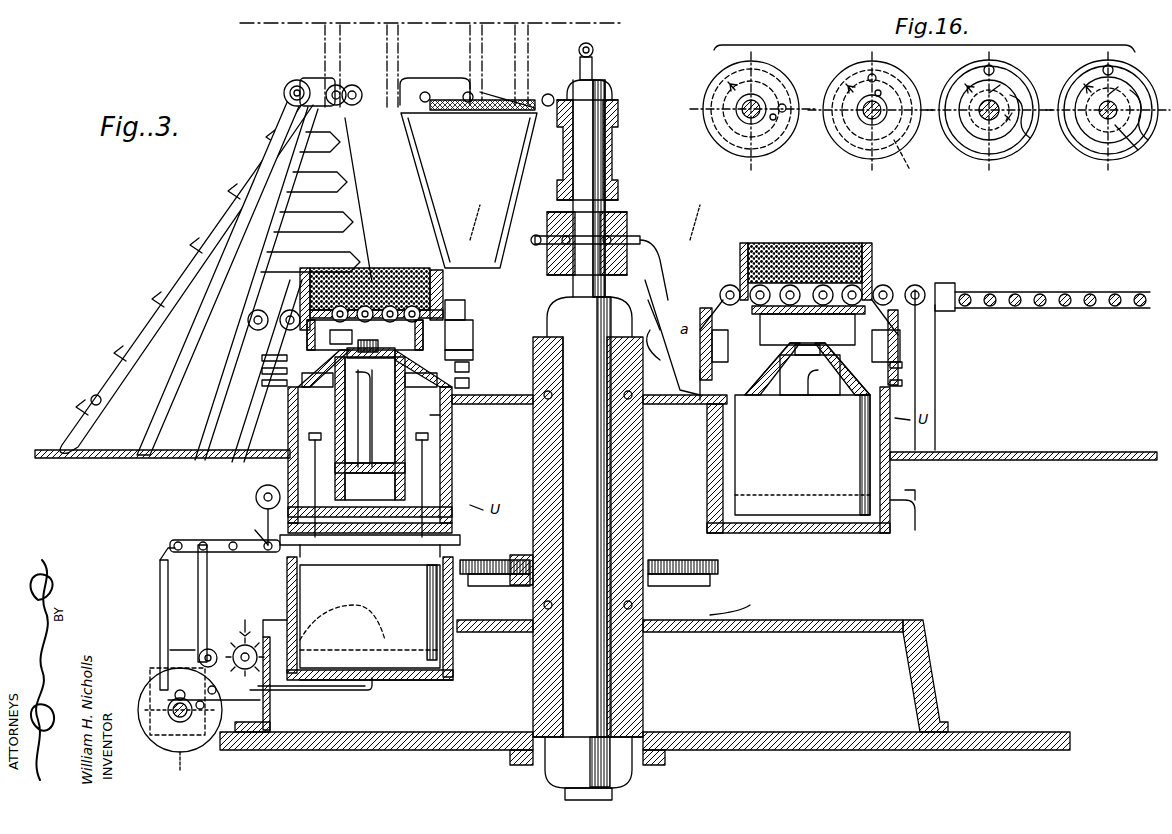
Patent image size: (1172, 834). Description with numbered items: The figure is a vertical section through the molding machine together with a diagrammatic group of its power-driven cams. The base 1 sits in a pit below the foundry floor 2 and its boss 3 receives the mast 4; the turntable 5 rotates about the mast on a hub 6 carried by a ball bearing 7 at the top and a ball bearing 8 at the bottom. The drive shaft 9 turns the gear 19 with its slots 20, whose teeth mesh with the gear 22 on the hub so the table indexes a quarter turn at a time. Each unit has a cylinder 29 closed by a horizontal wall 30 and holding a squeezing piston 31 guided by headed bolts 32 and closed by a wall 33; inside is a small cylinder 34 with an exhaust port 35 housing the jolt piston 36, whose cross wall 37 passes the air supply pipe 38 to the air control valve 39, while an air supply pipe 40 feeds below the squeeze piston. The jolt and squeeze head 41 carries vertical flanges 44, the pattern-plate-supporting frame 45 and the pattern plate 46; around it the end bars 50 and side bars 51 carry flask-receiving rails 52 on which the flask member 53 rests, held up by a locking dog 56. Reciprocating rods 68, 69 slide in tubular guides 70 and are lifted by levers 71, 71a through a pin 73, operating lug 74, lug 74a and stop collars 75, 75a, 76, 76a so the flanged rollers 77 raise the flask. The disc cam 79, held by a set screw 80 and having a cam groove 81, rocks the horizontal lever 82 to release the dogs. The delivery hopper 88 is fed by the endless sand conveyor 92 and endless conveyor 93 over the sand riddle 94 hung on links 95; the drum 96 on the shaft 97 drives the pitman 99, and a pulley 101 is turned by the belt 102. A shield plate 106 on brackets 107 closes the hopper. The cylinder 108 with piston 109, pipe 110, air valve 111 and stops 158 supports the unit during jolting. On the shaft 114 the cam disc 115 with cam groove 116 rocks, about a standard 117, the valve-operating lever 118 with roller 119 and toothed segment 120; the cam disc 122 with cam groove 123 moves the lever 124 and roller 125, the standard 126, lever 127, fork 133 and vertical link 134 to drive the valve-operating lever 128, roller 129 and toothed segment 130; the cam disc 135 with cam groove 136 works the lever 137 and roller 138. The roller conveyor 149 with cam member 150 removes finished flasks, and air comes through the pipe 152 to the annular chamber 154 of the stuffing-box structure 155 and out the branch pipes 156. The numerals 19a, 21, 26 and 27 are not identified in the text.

In FIG. 3, the base 1 is at (860, 625).
In FIG. 3, the floor 2 is at (50, 450).
In FIG. 3, the boss 3 is at (643, 668).
In FIG. 3, the mast 4 is at (605, 172).
In FIG. 3, the turntable 5 is at (672, 398).
In FIG. 3, the hub 6 is at (533, 460).
In FIG. 3, the ball bearing 7 is at (634, 392).
In FIG. 3, the ball bearing 8 is at (634, 605).
In FIG. 16, the drive shaft 9 is at (1054, 90).
In FIG. 3, the gear 19 is at (712, 603).
In FIG. 3, the plate flange 19a is at (741, 607).
In FIG. 3, the slots 20 is at (520, 586).
In FIG. 3, the gear ring 21 is at (485, 586).
In FIG. 3, the gear 22 is at (515, 555).
In FIG. 3, the shaft nut 26 is at (618, 140).
In FIG. 3, the shaft cap 27 is at (612, 90).
In FIG. 3, the cylinder 29 is at (452, 435).
In FIG. 3, the horizontal wall 30 is at (385, 548).
In FIG. 3, the squeezing piston 31 is at (288, 414).
In FIG. 3, the headed bolts 32 is at (288, 442).
In FIG. 3, the wall 33 is at (340, 548).
In FIG. 3, the small cylinder 34 is at (452, 418).
In FIG. 3, the exhaust port 35 is at (478, 485).
In FIG. 3, the jolt piston 36 is at (345, 414).
In FIG. 3, the cross wall 37 is at (380, 473).
In FIG. 3, the air supply pipe 38 is at (372, 410).
In FIG. 3, the air control valve 39 is at (266, 484).
In FIG. 3, the air supply pipe 40 is at (345, 560).
In FIG. 3, the jolt and squeeze head 41 is at (360, 340).
In FIG. 3, the vertical flanges 44 is at (584, 361).
In FIG. 3, the pattern-plate-supporting frame 45 is at (581, 332).
In FIG. 3, the pattern plate 46 is at (573, 335).
In FIG. 3, the end bars 50 is at (473, 345).
In FIG. 3, the side bars 51 is at (195, 322).
In FIG. 3, the flask-receiving rails 52 is at (305, 268).
In FIG. 3, the flask member 53 is at (470, 248).
In FIG. 3, the locking dog 56 is at (253, 486).
In FIG. 3, the reciprocating rods 68 is at (262, 300).
In FIG. 3, the reciprocating rods 69 is at (465, 305).
In FIG. 3, the tubular guides 70 is at (473, 357).
In FIG. 3, the levers 71 is at (262, 388).
In FIG. 3, the levers 71a is at (469, 383).
In FIG. 3, the pin 73 is at (660, 324).
In FIG. 3, the operating lug 74 is at (935, 372).
In FIG. 3, the lug 74a is at (645, 334).
In FIG. 3, the stop collar 75 is at (262, 358).
In FIG. 3, the adjustable stop 75a is at (469, 368).
In FIG. 3, the stop collar 76 is at (262, 372).
In FIG. 3, the adjustable stop 76a is at (421, 379).
In FIG. 3, the flanged rollers 77 is at (205, 300).
In FIG. 16, the disc cam 79 is at (1140, 75).
In FIG. 16, the set screw 80 is at (1135, 128).
In FIG. 16, the cam groove 81 is at (1130, 152).
In FIG. 16, the horizontal lever 82 is at (1100, 68).
In FIG. 3, the delivery hopper 88 is at (505, 160).
In FIG. 3, the endless sand conveyor 92 is at (460, 58).
In FIG. 3, the endless conveyor 93 is at (358, 80).
In FIG. 3, the sand riddle 94 is at (495, 112).
In FIG. 3, the links 95 is at (548, 94).
In FIG. 3, the drum 96 is at (438, 68).
In FIG. 3, the shaft 97 is at (284, 93).
In FIG. 3, the pitman 99 is at (490, 88).
In FIG. 3, the pulley 101 is at (295, 60).
In FIG. 3, the belt 102 is at (283, 132).
In FIG. 3, the shield plate 106 is at (599, 219).
In FIG. 3, the brackets 107 is at (538, 244).
In FIG. 3, the cylinder 108 is at (430, 680).
In FIG. 3, the piston 109 is at (453, 645).
In FIG. 3, the pipe 110 is at (320, 692).
In FIG. 3, the air valve 111 is at (245, 642).
In FIG. 3, the shaft 114 is at (165, 720).
In FIG. 16, the shaft 114 is at (742, 120).
In FIG. 3, the cam disc 115 is at (150, 683).
In FIG. 16, the cam disc 115 is at (718, 95).
In FIG. 16, the cam groove 116 is at (724, 108).
In FIG. 3, the standard 117 is at (201, 765).
In FIG. 3, the valve-operating lever 118 is at (170, 660).
In FIG. 3, the roller 119 is at (218, 708).
In FIG. 16, the roller 119 is at (783, 104).
In FIG. 3, the toothed segment 120 is at (218, 650).
In FIG. 16, the cam disc 122 is at (862, 158).
In FIG. 16, the cam groove 123 is at (887, 130).
In FIG. 3, the lever 124 is at (262, 695).
In FIG. 16, the roller 125 is at (846, 73).
In FIG. 3, the standard 126 is at (160, 588).
In FIG. 3, the lever 127 is at (255, 533).
In FIG. 3, the valve-operating lever 128 is at (241, 525).
In FIG. 3, the roller 129 is at (233, 552).
In FIG. 3, the toothed segment 130 is at (250, 560).
In FIG. 3, the fork 133 is at (216, 575).
In FIG. 3, the vertical link 134 is at (160, 565).
In FIG. 16, the cam disc 135 is at (955, 72).
In FIG. 16, the cam groove 136 is at (958, 135).
In FIG. 3, the lever 137 is at (262, 580).
In FIG. 16, the roller 138 is at (994, 68).
In FIG. 3, the roller conveyor 149 is at (1058, 315).
In FIG. 3, the cam member 150 is at (955, 305).
In FIG. 3, the pipe 152 is at (594, 52).
In FIG. 3, the annular chamber 154 is at (627, 225).
In FIG. 3, the stuffing-box structure 155 is at (548, 225).
In FIG. 3, the branch pipes 156 is at (655, 240).
In FIG. 3, the stops 158 is at (362, 608).